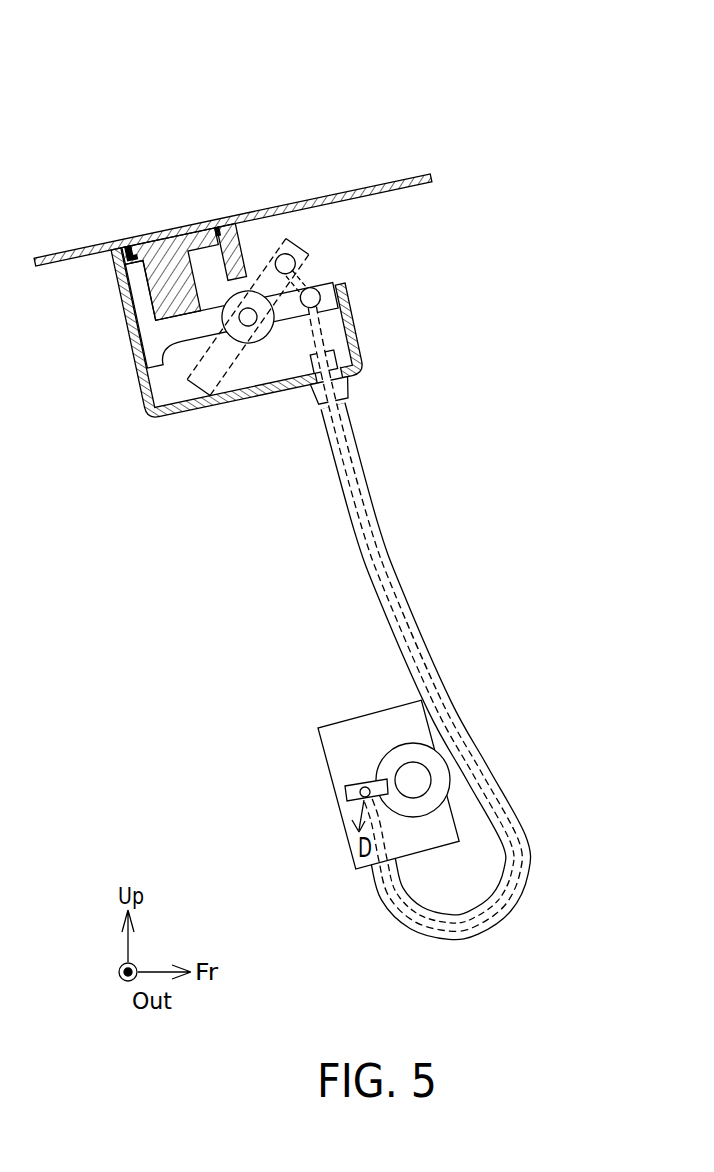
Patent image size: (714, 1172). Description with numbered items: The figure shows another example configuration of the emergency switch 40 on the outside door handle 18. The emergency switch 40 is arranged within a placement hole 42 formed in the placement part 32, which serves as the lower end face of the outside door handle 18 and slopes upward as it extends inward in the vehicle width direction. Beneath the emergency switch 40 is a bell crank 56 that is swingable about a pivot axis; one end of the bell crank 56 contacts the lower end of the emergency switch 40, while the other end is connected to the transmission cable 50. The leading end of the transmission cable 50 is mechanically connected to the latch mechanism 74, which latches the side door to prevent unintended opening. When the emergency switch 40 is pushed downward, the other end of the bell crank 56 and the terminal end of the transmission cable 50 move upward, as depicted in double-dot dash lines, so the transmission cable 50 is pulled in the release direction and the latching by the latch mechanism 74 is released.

The outside door handle 18 is at (281, 107).
The placement part 32 is at (308, 200).
The emergency switch 40 is at (169, 236).
The placement hole 42 is at (128, 263).
The bell crank 56 is at (160, 363).
The transmission cable 50 is at (358, 480).
The latch mechanism 74 is at (318, 757).